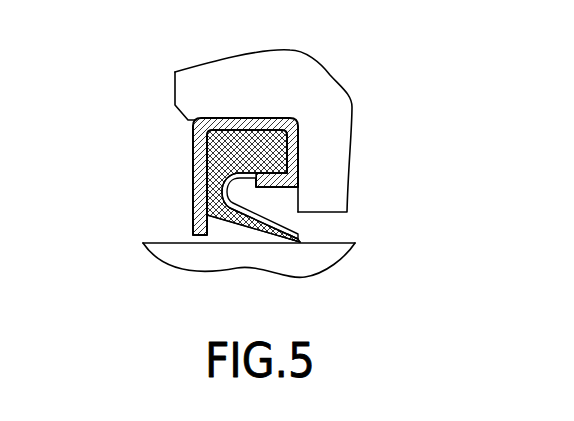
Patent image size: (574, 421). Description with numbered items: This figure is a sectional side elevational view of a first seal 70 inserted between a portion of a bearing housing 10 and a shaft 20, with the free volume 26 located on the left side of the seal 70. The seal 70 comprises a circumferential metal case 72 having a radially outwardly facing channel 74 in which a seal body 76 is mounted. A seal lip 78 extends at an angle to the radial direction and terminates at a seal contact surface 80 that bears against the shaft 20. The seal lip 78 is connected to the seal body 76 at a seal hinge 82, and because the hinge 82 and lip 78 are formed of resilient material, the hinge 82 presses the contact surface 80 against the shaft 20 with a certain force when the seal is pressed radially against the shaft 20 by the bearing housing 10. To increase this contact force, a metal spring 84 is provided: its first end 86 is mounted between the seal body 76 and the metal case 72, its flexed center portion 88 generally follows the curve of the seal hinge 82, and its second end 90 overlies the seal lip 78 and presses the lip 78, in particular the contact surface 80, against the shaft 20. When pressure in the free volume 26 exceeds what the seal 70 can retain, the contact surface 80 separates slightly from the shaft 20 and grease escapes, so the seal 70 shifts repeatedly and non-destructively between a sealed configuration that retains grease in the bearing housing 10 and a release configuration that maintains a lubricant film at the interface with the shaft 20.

The bearing housing 10 is at (326, 82).
The shaft 20 is at (327, 256).
The free volume 26 is at (110, 170).
The first seal 70 is at (241, 164).
The circumferential metal case 72 is at (238, 122).
The radially outwardly facing channel 74 is at (209, 229).
The seal body 76 is at (262, 152).
The seal lip 78 is at (252, 225).
The seal contact surface 80 is at (283, 238).
The seal hinge 82 is at (222, 192).
The metal spring 84 is at (264, 222).
The first end 86 is at (290, 152).
The flexed center portion 88 is at (233, 193).
The second end 90 is at (292, 239).